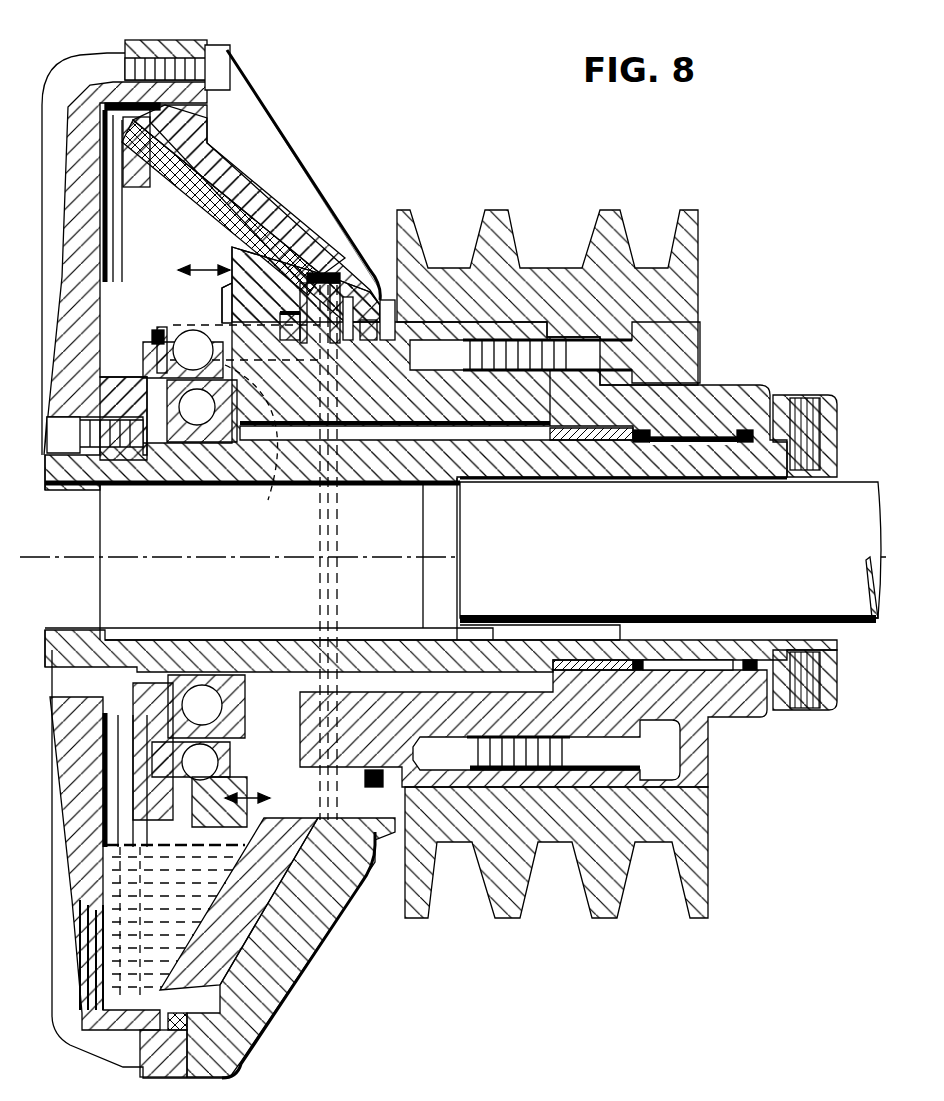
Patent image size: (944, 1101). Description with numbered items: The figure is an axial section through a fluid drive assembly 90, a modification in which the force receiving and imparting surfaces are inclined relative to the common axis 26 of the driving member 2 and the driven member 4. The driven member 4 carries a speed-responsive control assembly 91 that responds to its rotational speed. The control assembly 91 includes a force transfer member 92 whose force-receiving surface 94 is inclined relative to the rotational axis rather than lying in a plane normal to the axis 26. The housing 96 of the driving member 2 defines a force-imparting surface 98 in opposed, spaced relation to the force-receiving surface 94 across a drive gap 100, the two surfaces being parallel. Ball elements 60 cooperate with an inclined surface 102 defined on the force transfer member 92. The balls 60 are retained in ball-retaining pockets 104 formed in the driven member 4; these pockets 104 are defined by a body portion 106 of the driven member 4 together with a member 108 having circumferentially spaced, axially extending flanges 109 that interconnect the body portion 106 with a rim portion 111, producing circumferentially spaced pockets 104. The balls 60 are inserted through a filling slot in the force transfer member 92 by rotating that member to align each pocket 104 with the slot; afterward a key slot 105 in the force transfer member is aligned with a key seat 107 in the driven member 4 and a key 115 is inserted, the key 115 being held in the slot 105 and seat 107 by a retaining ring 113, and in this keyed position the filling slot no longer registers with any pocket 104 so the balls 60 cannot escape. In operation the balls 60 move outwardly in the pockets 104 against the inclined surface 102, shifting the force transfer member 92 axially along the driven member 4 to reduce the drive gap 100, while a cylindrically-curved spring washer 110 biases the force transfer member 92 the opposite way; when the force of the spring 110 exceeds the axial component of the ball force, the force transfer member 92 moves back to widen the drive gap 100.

The driving member 2 is at (674, 478).
The driven member 4 is at (740, 385).
The axis 26 is at (218, 560).
The ball elements 60 is at (185, 342).
The drive assembly 90 is at (338, 135).
The speed-responsive control assembly 91 is at (157, 280).
The force transfer member 92 is at (232, 180).
The force-receiving surface 94 is at (250, 218).
The housing 96 is at (197, 113).
The force-imparting surface 98 is at (277, 250).
The drive gap 100 is at (182, 160).
The inclined surface 102 is at (198, 800).
The ball-retaining pockets 104 is at (263, 360).
The key slot 105 is at (230, 293).
The body portion 106 is at (355, 420).
The key seat 107 is at (282, 467).
The member 108 is at (150, 352).
The flanges 109 is at (192, 425).
The spring washer 110 is at (330, 595).
The rim portion 111 is at (147, 370).
The retaining ring 113 is at (165, 337).
The key 115 is at (165, 335).